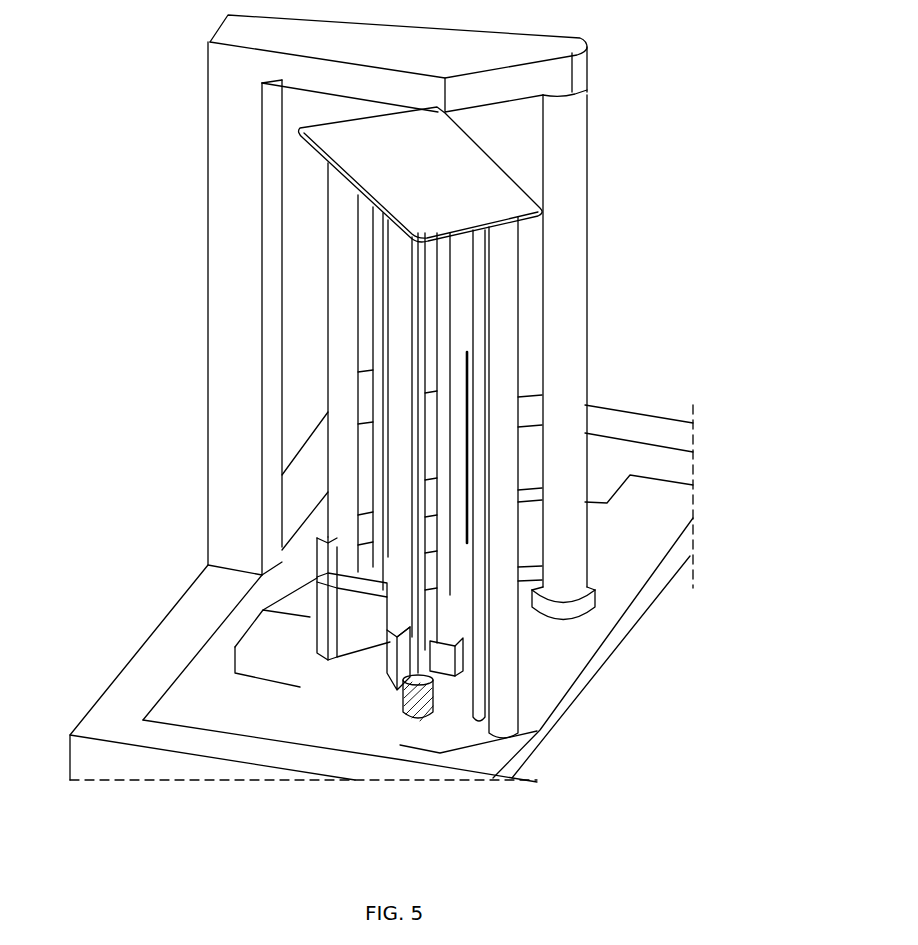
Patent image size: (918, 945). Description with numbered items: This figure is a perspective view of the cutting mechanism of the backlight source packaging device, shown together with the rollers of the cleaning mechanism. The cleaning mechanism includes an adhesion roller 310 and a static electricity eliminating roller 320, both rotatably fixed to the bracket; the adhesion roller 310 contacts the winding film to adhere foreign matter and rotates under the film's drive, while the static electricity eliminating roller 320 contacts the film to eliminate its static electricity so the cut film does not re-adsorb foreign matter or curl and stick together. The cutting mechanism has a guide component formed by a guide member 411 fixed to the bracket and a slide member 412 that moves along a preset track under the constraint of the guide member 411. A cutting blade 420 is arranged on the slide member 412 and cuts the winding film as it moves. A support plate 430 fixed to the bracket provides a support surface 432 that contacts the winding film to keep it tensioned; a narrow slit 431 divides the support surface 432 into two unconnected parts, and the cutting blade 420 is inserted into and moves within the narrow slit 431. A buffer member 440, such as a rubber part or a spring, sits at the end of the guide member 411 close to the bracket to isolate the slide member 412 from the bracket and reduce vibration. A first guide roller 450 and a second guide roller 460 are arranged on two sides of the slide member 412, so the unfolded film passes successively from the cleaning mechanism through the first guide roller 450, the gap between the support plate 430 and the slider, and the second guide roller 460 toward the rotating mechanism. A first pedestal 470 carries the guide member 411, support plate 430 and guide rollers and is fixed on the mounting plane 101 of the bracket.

The mounting plane 101 is at (290, 635).
The adhesion roller 310 is at (565, 338).
The static electricity eliminating roller 320 is at (345, 342).
The guide member 411 is at (420, 608).
The slide member 412 is at (407, 628).
The cutting blade 420 is at (463, 655).
The support plate 430 is at (480, 693).
The narrow slit 431 is at (467, 417).
The support surface 432 is at (460, 455).
The buffer member 440 is at (413, 700).
The first guide roller 450 is at (398, 533).
The second guide roller 460 is at (502, 652).
The first pedestal 470 is at (375, 685).